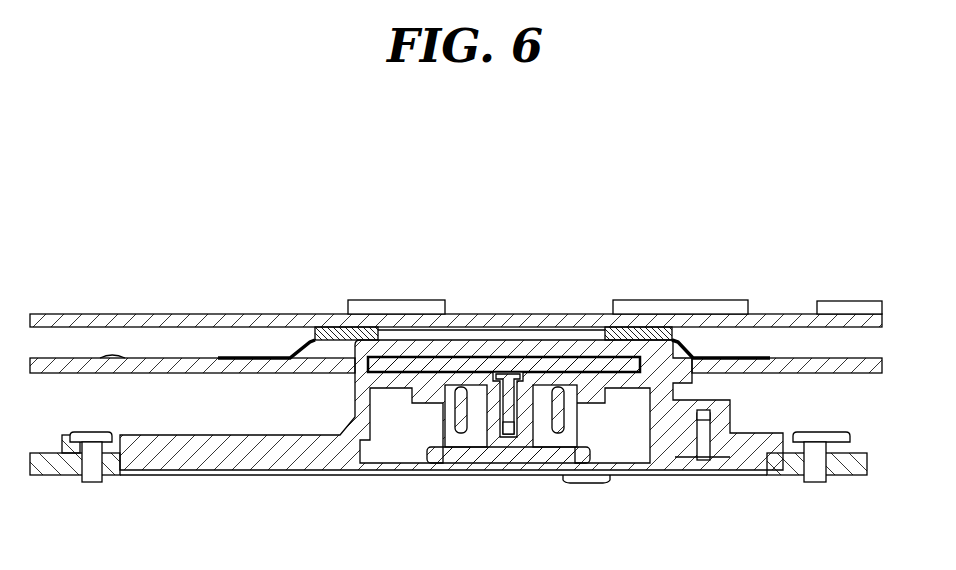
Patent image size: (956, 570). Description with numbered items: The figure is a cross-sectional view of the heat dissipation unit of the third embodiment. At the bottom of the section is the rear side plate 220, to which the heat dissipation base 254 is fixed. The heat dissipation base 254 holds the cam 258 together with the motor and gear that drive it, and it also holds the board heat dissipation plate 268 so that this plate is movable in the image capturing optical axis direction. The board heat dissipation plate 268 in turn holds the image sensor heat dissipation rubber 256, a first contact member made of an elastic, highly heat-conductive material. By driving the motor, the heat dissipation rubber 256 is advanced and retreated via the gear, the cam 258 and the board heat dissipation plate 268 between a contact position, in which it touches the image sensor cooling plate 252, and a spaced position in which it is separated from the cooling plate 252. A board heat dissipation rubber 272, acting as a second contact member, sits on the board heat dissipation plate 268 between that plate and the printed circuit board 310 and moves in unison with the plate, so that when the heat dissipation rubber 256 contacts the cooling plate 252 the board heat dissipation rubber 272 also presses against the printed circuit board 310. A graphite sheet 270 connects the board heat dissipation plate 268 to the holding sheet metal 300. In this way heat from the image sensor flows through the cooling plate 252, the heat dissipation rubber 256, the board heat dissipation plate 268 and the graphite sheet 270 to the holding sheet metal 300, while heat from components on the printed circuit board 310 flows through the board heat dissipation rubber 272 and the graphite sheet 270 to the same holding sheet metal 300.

The rear side plate 220 is at (835, 470).
The image sensor cooling plate 252 is at (640, 357).
The heat dissipation base 254 is at (733, 404).
The image sensor heat dissipation rubber 256 is at (506, 373).
The cam 258 is at (508, 450).
The board heat dissipation plate 268 is at (330, 333).
The graphite sheet 270 is at (225, 358).
The board heat dissipation rubber 272 is at (627, 333).
The holding sheet metal 300 is at (820, 365).
The printed circuit board 310 is at (248, 322).